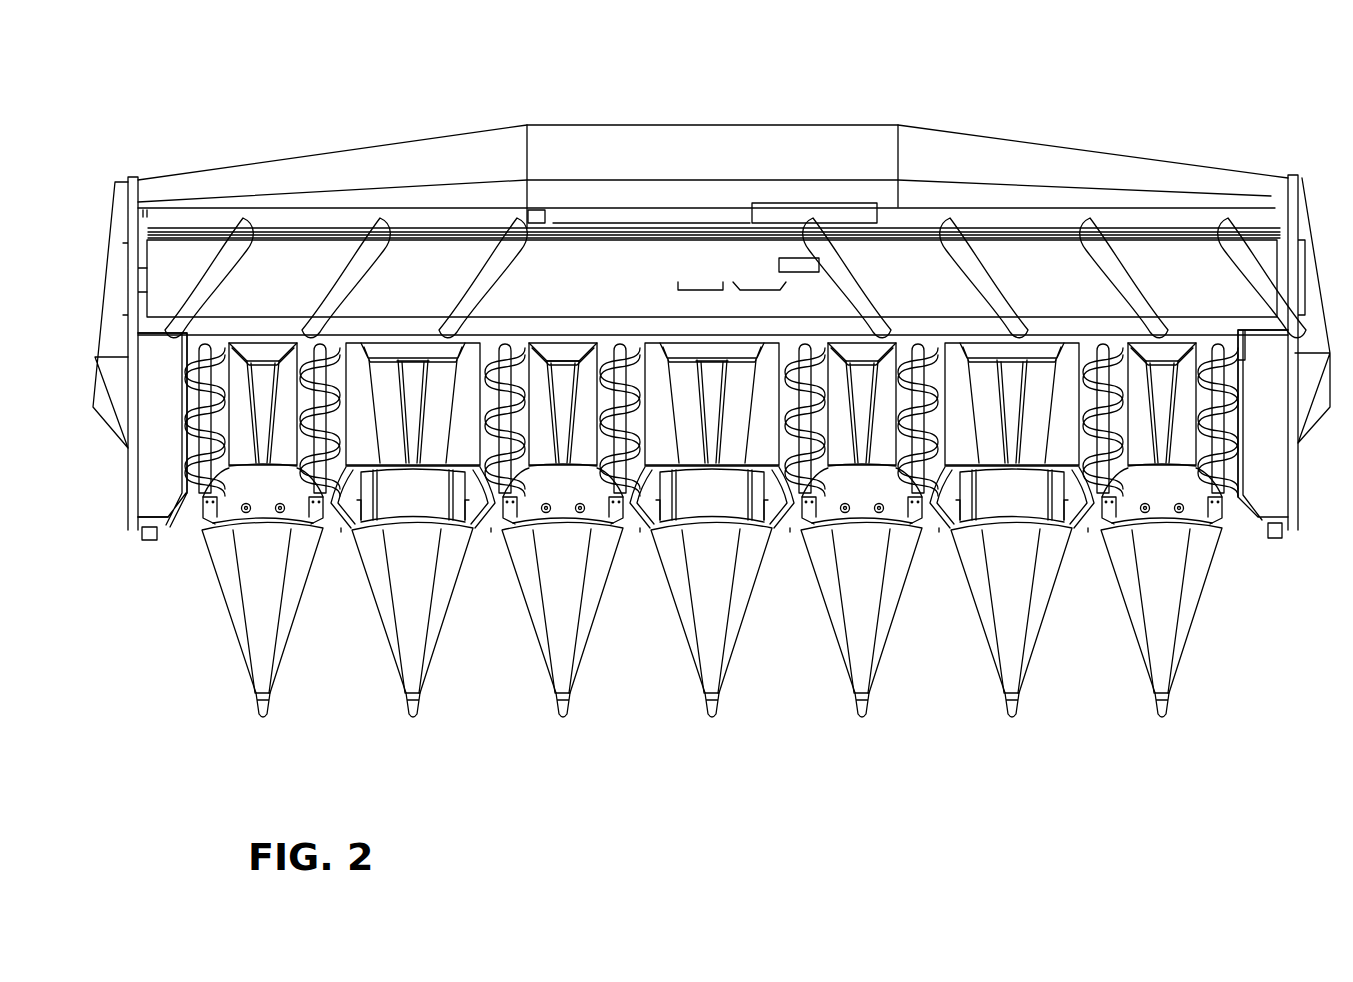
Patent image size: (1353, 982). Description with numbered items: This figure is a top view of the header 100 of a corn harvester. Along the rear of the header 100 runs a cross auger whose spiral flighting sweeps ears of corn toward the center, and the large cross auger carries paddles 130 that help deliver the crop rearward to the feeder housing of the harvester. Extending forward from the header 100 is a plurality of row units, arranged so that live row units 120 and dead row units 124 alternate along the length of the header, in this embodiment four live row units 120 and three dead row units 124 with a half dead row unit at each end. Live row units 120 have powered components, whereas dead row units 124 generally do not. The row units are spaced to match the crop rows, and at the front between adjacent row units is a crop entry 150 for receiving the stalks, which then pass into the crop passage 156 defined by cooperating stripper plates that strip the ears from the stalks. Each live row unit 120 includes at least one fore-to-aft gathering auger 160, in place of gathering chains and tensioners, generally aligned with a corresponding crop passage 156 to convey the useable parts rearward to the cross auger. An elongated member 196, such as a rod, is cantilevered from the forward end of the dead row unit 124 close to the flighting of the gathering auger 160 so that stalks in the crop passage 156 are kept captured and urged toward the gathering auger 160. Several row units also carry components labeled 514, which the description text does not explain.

The header 100 is at (1238, 106).
The live row unit 120 is at (262, 480).
The dead row unit 124 is at (155, 480).
The paddle 130 is at (800, 258).
The crop entry 150 is at (322, 716).
The crop passage 156 is at (341, 545).
The gathering auger 160 is at (208, 343).
The elongated member 196 is at (187, 527).
The stalk roll cover 514 is at (394, 402).